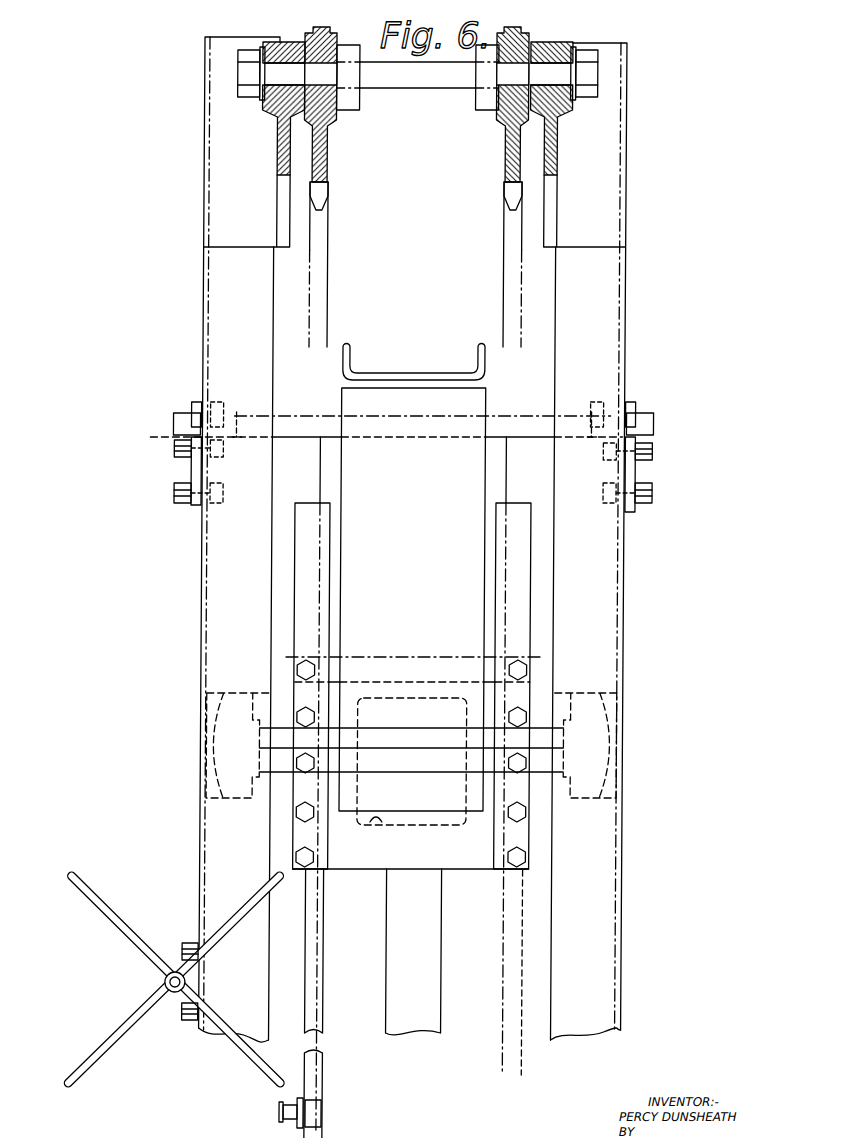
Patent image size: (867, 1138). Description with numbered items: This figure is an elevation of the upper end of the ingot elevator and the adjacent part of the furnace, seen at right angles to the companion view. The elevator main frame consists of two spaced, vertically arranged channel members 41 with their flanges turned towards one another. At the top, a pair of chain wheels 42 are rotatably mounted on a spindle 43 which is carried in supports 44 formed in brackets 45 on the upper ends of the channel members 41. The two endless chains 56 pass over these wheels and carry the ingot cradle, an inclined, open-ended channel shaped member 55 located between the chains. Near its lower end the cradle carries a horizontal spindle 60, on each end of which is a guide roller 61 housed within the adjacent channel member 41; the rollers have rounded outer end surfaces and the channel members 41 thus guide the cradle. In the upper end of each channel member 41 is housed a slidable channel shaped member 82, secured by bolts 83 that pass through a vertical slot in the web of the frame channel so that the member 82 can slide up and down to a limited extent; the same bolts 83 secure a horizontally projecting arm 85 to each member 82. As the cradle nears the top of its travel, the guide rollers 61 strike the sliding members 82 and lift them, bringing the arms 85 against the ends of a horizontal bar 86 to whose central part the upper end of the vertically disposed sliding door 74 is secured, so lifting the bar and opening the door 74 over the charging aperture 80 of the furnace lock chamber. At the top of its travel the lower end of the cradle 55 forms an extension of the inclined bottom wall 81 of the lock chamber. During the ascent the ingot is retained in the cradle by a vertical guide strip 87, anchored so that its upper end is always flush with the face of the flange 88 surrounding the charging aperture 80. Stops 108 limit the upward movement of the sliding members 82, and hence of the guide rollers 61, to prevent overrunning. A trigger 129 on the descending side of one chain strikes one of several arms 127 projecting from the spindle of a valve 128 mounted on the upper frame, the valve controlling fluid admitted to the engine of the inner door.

The channel members 41 is at (277, 320).
The chain wheels 42 is at (505, 175).
The spindle 43 is at (412, 82).
The supports 44 is at (262, 96).
The brackets 45 is at (244, 177).
The channel shaped member 55 is at (376, 549).
The chains 56 is at (505, 255).
The horizontal spindle 60 is at (540, 728).
The guide roller 61 is at (232, 798).
The sliding door 74 is at (338, 471).
The charging aperture 80 is at (446, 822).
The inclined bottom wall 81 is at (383, 820).
The channel shaped member 82 is at (206, 638).
The bolts 83 is at (177, 491).
The horizontally projecting arm 85 is at (176, 432).
The horizontal bar 86 is at (299, 424).
The vertical guide strip 87 is at (419, 1010).
The flange 88 is at (485, 832).
The stops 108 is at (239, 412).
The arms 127 is at (110, 908).
The valve 128 is at (166, 983).
The trigger 129 is at (291, 1108).